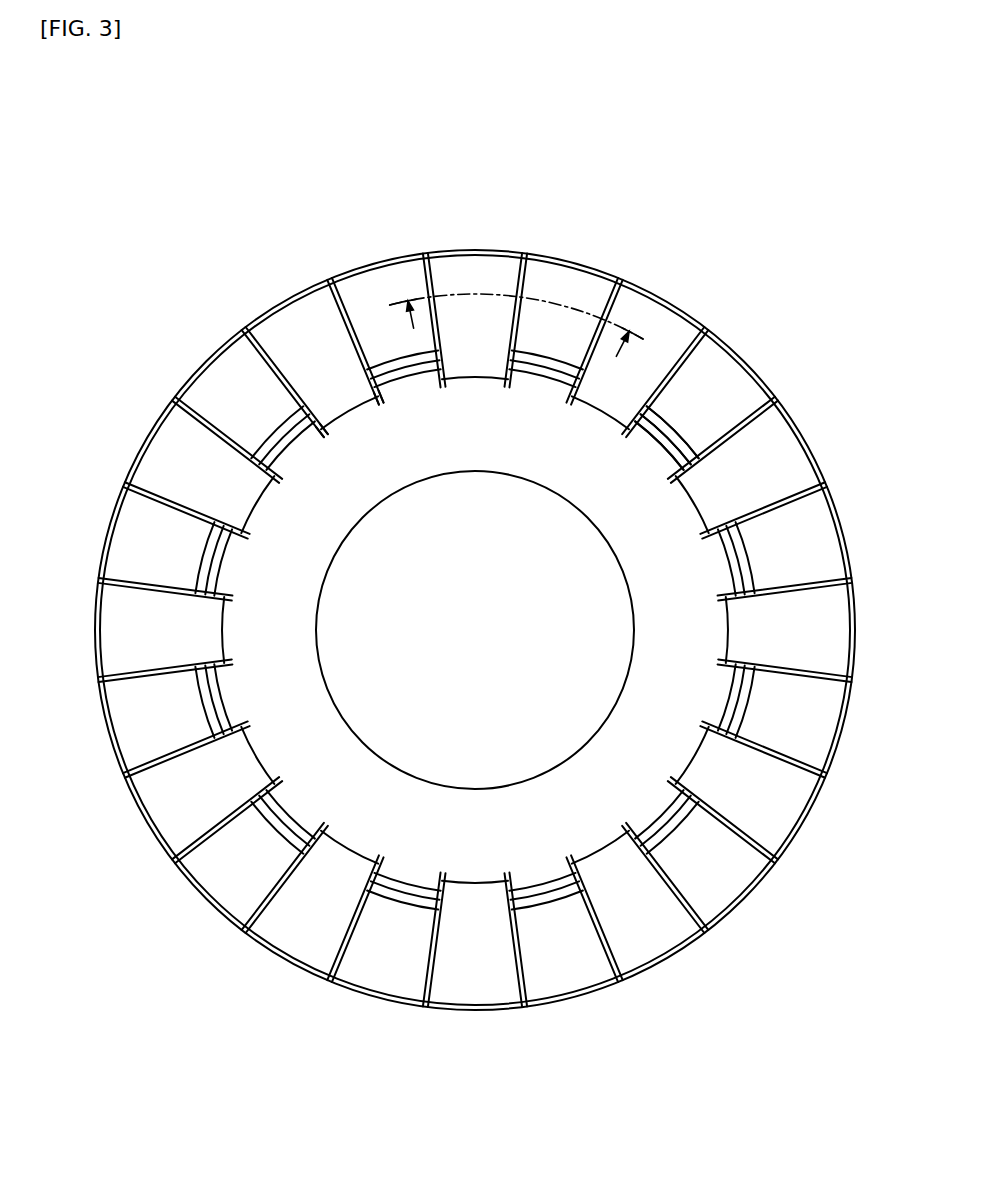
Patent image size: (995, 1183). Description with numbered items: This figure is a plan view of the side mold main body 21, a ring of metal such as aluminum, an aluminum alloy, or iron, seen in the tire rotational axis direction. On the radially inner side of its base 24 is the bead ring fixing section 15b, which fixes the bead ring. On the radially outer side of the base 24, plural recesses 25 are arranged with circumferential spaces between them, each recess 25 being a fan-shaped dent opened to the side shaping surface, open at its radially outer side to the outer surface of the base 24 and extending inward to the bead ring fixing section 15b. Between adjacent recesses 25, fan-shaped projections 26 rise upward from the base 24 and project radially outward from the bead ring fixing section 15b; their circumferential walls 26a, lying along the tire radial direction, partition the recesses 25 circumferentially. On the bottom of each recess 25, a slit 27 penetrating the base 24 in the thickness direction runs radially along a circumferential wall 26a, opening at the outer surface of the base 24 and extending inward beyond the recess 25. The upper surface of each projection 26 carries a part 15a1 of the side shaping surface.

The side mold main body 21 is at (463, 98).
The base 24 is at (607, 540).
The recess 25 is at (480, 268).
The projection 26 is at (396, 258).
The circumferential wall 26a is at (441, 278).
The slit 27 is at (300, 397).
The part of the side shaping surface 15a1 is at (553, 328).
The bead ring fixing section 15b is at (640, 477).